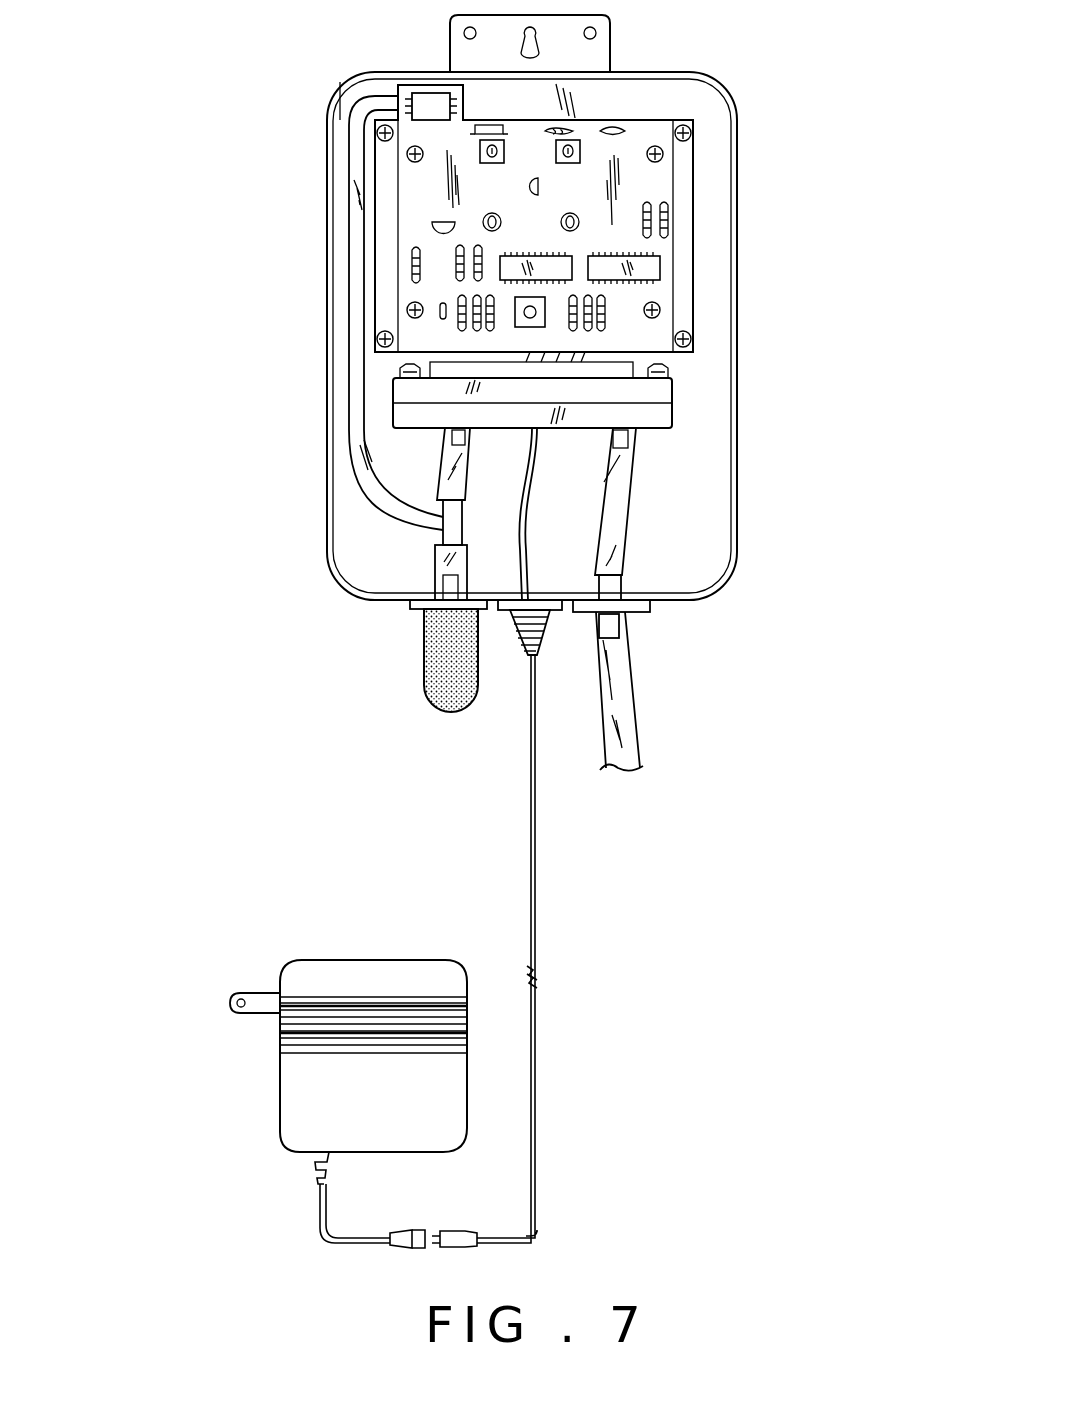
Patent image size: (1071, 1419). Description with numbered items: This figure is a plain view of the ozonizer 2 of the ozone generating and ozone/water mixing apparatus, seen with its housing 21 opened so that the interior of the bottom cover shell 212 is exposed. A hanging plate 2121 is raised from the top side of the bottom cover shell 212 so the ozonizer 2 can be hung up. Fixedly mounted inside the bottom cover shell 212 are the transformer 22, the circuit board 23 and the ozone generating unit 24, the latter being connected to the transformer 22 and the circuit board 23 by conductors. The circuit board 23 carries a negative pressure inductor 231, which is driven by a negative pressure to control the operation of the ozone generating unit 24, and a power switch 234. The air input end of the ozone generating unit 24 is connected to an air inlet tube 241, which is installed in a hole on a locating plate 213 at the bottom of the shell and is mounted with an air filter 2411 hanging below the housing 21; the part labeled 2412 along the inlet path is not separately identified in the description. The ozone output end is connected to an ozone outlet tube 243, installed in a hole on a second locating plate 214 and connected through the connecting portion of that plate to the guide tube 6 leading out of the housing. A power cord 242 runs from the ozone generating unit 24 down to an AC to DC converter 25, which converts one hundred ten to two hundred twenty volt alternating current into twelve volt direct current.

The ozonizer 2 is at (742, 336).
The housing 21 is at (728, 464).
The bottom cover shell 212 is at (722, 124).
The hanging plate 2121 is at (596, 50).
The locating plate 213 is at (437, 613).
The locating plate 214 is at (632, 614).
The transformer 22 is at (690, 228).
The circuit board 23 is at (400, 209).
The negative pressure inductor 231 is at (428, 104).
The power switch 234 is at (512, 312).
The ozone generating unit 24 is at (653, 396).
The air inlet tube 241 is at (415, 561).
The air filter 2411 is at (438, 664).
The sensor tube 2412 is at (355, 265).
The power cord 242 is at (531, 702).
The ozone outlet tube 243 is at (632, 564).
The guide tube 6 is at (613, 696).
The AC to DC converter 25 is at (382, 980).